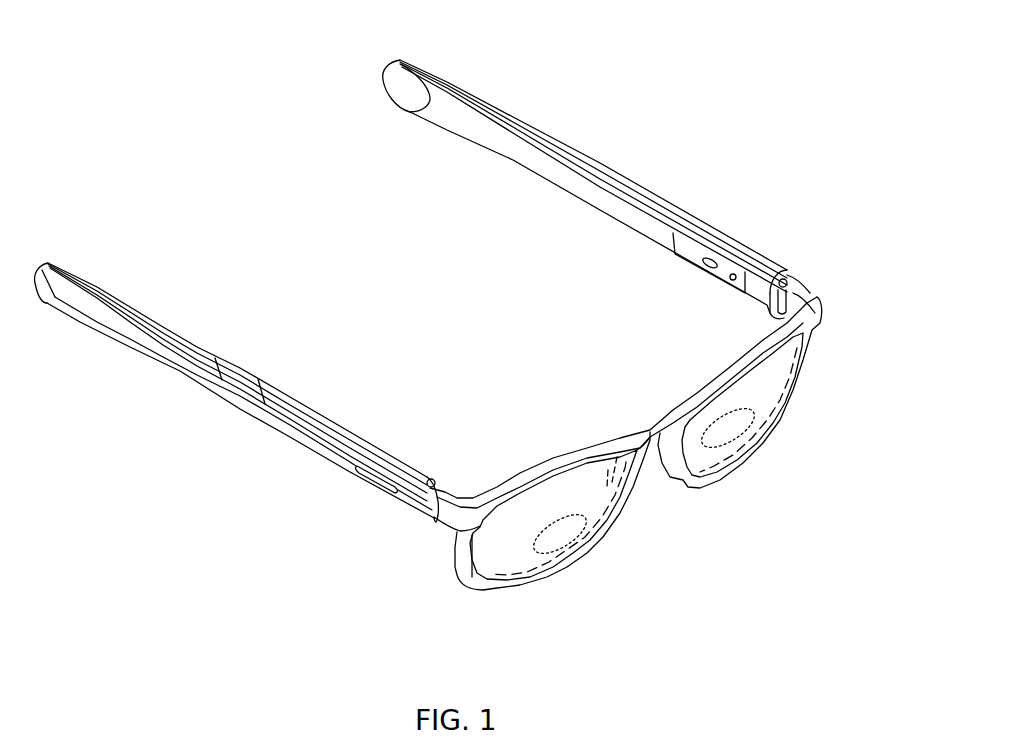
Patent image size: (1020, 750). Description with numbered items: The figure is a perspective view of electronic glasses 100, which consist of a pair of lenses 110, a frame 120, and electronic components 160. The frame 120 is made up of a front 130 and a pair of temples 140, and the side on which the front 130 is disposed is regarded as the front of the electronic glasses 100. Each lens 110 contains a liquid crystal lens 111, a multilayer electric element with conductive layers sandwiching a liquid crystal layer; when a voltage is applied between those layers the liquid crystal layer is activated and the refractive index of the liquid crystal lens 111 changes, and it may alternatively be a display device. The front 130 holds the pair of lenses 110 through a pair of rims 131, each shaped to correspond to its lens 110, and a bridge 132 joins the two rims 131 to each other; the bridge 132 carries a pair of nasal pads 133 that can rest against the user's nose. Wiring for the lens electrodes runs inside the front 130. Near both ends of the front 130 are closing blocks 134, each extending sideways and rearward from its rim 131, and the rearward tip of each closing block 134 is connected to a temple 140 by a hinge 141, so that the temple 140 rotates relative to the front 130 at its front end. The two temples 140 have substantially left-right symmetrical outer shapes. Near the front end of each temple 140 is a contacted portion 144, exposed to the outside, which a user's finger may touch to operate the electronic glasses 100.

The electronic glasses 100 is at (818, 621).
The lens 110 is at (513, 560).
The liquid crystal lens 111 is at (560, 547).
The frame 120 is at (698, 72).
The front 130 is at (669, 333).
The rim 131 is at (573, 447).
The bridge 132 is at (657, 427).
The nasal pad 133 is at (600, 432).
The closing block 134 is at (443, 528).
The temple 140 is at (222, 368).
The hinge 141 is at (433, 483).
The contacted portion 144 is at (375, 482).
The electronic components 160 is at (40, 262).